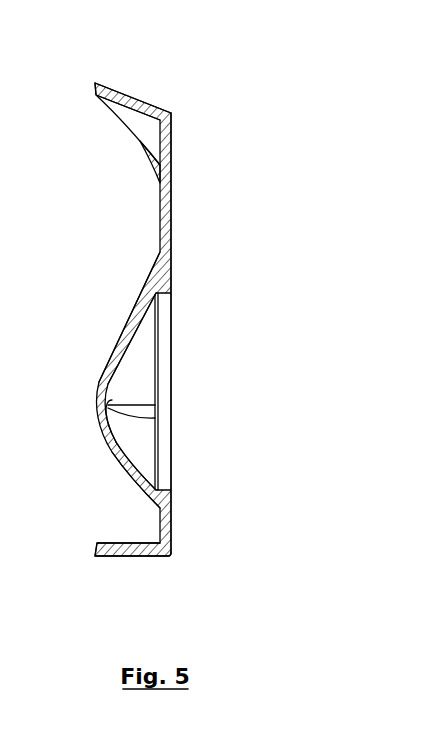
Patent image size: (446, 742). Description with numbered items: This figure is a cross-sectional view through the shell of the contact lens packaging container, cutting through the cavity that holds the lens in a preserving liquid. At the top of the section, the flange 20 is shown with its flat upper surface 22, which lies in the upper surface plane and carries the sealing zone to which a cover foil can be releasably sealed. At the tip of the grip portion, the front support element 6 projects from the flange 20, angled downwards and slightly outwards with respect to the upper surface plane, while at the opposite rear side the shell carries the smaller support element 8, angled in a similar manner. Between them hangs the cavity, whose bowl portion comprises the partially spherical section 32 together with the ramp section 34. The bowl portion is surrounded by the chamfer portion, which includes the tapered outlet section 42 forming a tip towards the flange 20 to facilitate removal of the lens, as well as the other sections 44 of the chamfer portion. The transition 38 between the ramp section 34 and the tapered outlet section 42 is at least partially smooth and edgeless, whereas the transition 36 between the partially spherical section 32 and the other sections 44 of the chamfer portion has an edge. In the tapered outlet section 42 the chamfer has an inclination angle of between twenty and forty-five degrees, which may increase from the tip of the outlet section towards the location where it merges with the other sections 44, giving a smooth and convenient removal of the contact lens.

The front support element 6 is at (170, 112).
The support element 8 is at (152, 552).
The flange 20 is at (167, 213).
The flat upper surface 22 is at (173, 228).
The tapered outlet section 42 is at (168, 295).
The transition 38 is at (158, 268).
The ramp section 34 is at (115, 344).
The partially spherical section 32 is at (117, 443).
The transition 36 is at (165, 481).
The other sections of the chamfer portion 44 is at (169, 497).